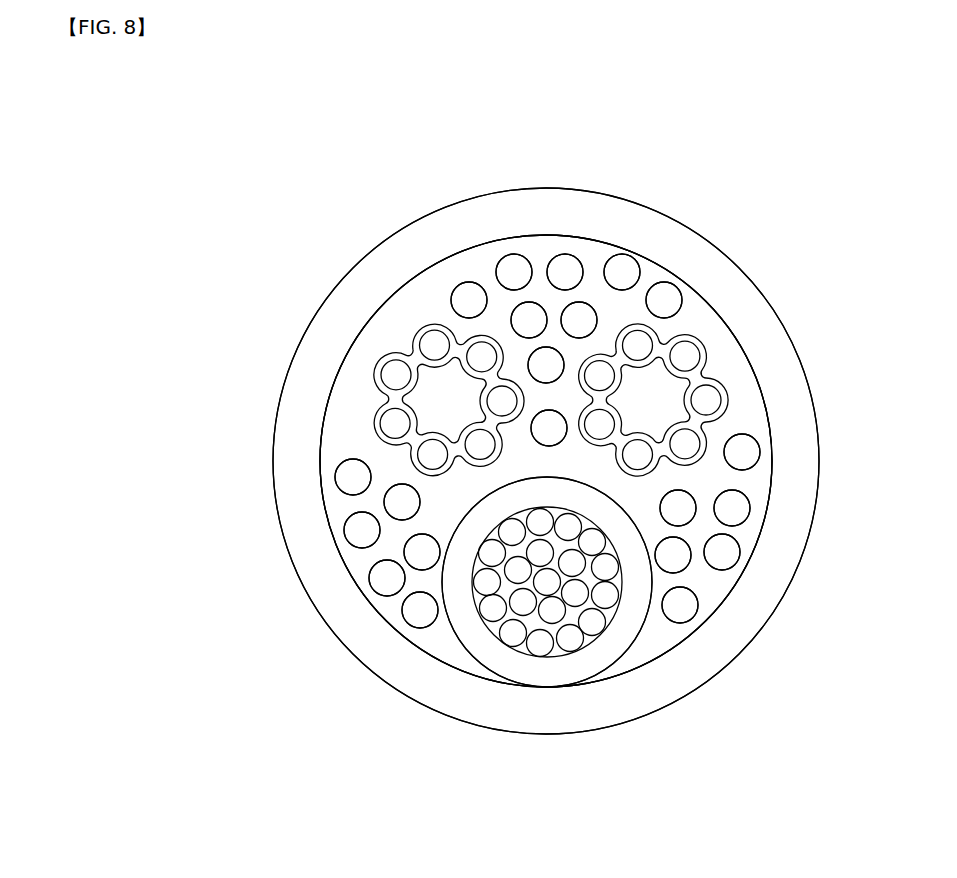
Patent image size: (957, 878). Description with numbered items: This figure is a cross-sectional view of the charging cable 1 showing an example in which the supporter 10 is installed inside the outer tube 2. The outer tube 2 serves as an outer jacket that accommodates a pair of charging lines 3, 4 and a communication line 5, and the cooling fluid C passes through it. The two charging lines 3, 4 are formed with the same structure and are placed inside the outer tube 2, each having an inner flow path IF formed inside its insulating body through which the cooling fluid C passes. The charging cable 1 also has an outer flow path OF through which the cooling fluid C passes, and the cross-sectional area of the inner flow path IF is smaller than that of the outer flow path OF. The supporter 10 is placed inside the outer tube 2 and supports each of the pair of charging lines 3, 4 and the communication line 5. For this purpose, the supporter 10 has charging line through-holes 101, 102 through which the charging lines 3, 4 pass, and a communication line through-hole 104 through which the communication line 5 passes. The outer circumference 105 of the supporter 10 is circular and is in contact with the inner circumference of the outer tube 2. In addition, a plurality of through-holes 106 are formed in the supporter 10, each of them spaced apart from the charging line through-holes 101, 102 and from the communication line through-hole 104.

The charging cable 1 is at (724, 170).
The outer tube 2 is at (807, 475).
The charging line 3 is at (399, 343).
The charging line 4 is at (704, 342).
The communication line 5 is at (636, 623).
The supporter 10 is at (737, 368).
The charging line through-hole 101 is at (425, 323).
The charging line through-hole 102 is at (708, 345).
The communication line through-hole 104 is at (460, 645).
The outer circumference of the supporter 105 is at (723, 602).
The through-holes 106 is at (566, 262).
The inner flow path IF is at (438, 408).
The outer flow path OF is at (446, 513).
The cooling fluid C is at (643, 502).